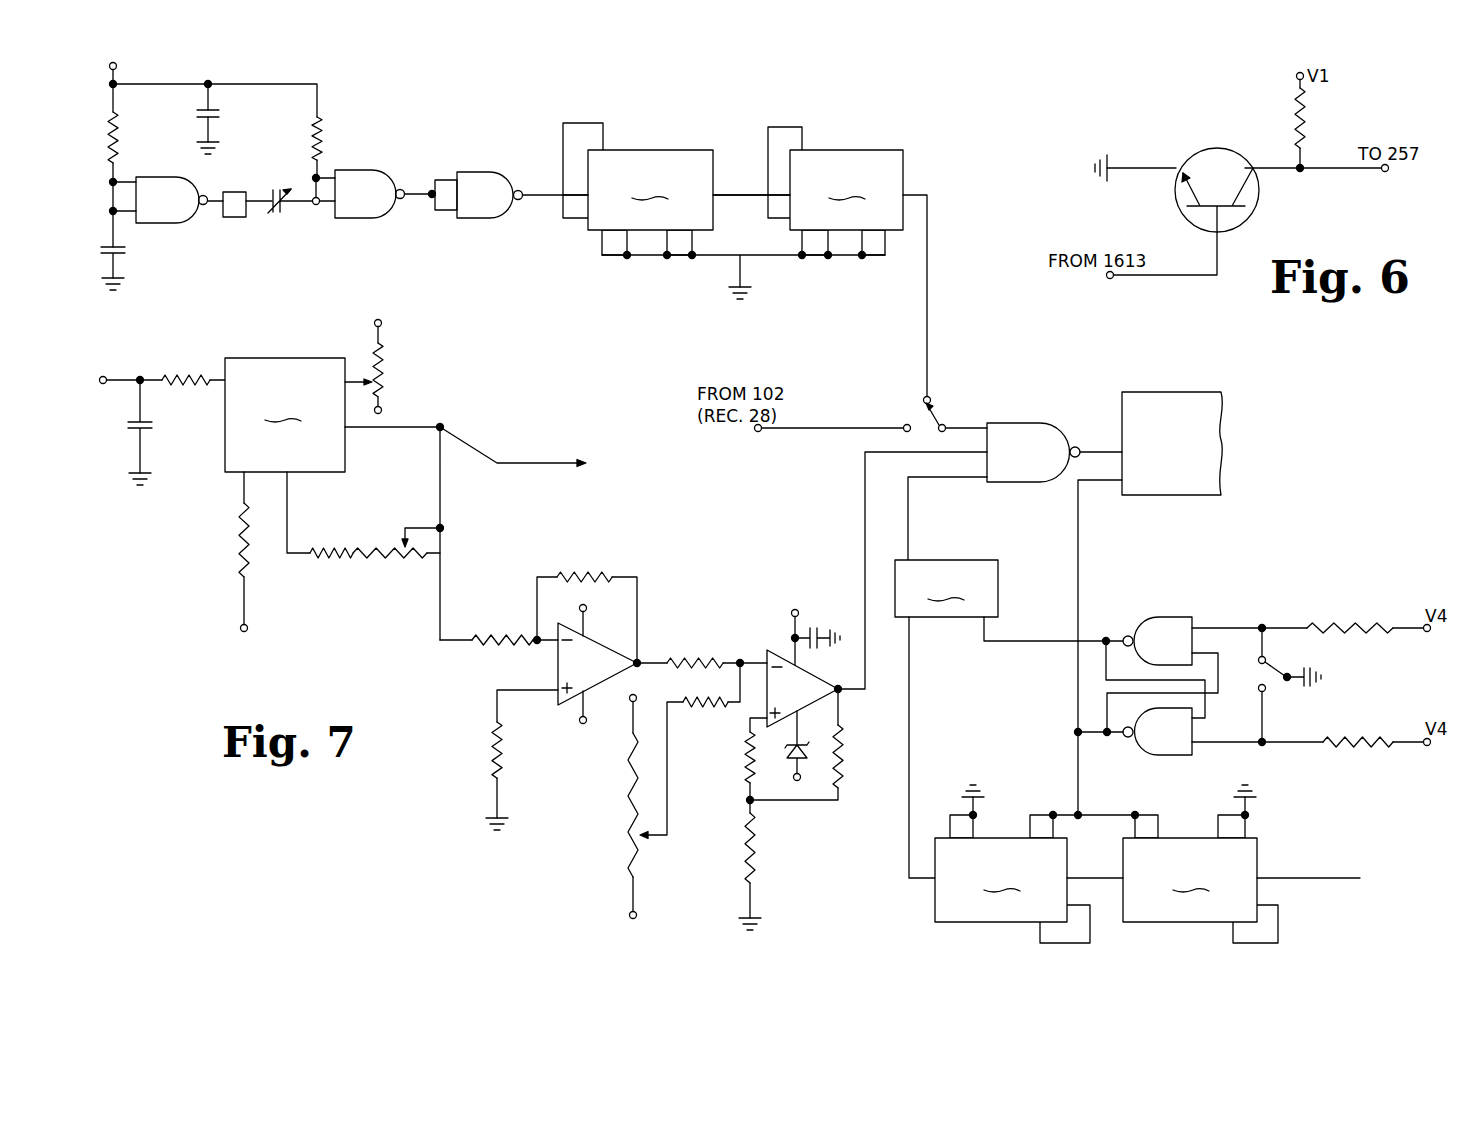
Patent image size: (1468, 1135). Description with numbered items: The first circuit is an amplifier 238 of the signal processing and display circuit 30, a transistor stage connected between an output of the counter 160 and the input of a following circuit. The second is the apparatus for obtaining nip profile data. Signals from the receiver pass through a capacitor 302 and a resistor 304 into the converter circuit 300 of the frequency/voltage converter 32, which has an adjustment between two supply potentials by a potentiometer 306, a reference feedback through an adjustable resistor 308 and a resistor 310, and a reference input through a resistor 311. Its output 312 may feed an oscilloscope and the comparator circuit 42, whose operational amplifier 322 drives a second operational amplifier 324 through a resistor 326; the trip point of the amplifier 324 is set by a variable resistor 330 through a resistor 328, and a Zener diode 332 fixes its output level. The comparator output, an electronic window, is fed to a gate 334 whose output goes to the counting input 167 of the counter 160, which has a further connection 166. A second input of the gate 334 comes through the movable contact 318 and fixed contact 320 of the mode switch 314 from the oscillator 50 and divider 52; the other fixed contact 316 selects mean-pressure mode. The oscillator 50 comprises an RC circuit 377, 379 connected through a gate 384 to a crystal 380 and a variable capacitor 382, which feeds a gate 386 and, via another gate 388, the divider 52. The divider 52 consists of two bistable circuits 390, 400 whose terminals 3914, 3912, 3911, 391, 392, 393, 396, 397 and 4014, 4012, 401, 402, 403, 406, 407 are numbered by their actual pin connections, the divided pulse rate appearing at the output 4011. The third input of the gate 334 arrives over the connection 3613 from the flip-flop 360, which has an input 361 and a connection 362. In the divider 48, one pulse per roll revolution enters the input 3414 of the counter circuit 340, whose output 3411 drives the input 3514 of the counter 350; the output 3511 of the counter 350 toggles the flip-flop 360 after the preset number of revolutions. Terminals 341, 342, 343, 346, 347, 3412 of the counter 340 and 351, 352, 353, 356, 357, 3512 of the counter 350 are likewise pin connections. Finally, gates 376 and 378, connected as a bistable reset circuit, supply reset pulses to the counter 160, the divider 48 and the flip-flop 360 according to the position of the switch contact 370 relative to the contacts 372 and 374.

In FIG. 6, the amplifier 238 is at (1290, 230).
In FIG. 7, the oscillator 50 is at (312, 169).
In FIG. 7, the RC circuit 377 is at (118, 136).
In FIG. 7, the RC circuit 379 is at (121, 252).
In FIG. 7, the gate 384 is at (160, 181).
In FIG. 7, the crystal 380 is at (236, 192).
In FIG. 7, the variable capacitor 382 is at (277, 188).
In FIG. 7, the gate 386 is at (365, 181).
In FIG. 7, the gate 388 is at (485, 180).
In FIG. 7, the divider 52 is at (728, 121).
In FIG. 7, the bistable circuit 390 is at (650, 190).
In FIG. 7, the bistable circuit 400 is at (846, 190).
In FIG. 7, the pin connection 3912 is at (630, 134).
In FIG. 7, the pin connection 3911 is at (713, 194).
In FIG. 7, the pin connection 3914 is at (572, 196).
In FIG. 7, the pin connection 391 is at (575, 220).
In FIG. 7, the pin connection 392 is at (602, 250).
In FIG. 7, the pin connection 393 is at (628, 258).
In FIG. 7, the pin connection 396 is at (672, 256).
In FIG. 7, the pin connection 397 is at (699, 243).
In FIG. 7, the pin connection 4014 is at (775, 190).
In FIG. 7, the pin connection 4012 is at (802, 138).
In FIG. 7, the output 4011 is at (910, 196).
In FIG. 7, the pin connection 401 is at (782, 218).
In FIG. 7, the pin connection 402 is at (802, 256).
In FIG. 7, the pin connection 403 is at (829, 258).
In FIG. 7, the pin connection 406 is at (864, 257).
In FIG. 7, the pin connection 407 is at (885, 243).
In FIG. 7, the digital/analog converter 32 is at (342, 314).
In FIG. 7, the converter circuit 300 is at (285, 415).
In FIG. 7, the capacitor 302 is at (152, 424).
In FIG. 7, the resistor 304 is at (187, 386).
In FIG. 7, the potentiometer 306 is at (388, 378).
In FIG. 7, the adjustable resistor 308 is at (408, 561).
In FIG. 7, the resistor 310 is at (338, 561).
In FIG. 7, the resistor 311 is at (236, 539).
In FIG. 7, the output 312 is at (386, 431).
In FIG. 7, the comparator circuit 42 is at (732, 562).
In FIG. 7, the operational amplifier 322 is at (597, 747).
In FIG. 7, the operational amplifier 324 is at (780, 647).
In FIG. 7, the resistor 326 is at (690, 666).
In FIG. 7, the resistor 328 is at (703, 705).
In FIG. 7, the variable resistor 330 is at (660, 848).
In FIG. 7, the Zener diode 332 is at (808, 757).
In FIG. 7, the mode switch 314 is at (905, 410).
In FIG. 7, the contact 316 is at (903, 425).
In FIG. 7, the movable contact 318 is at (941, 421).
In FIG. 7, the fixed contact 320 is at (932, 399).
In FIG. 7, the gate 334 is at (1018, 425).
In FIG. 7, the input connection 3613 is at (909, 539).
In FIG. 7, the counting input 167 is at (1109, 448).
In FIG. 7, the lead 166 is at (1108, 481).
In FIG. 7, the counter 160 is at (1184, 405).
In FIG. 7, the signal processing and display circuit 30 is at (1240, 460).
In FIG. 7, the flip-flop 360 is at (946, 588).
In FIG. 7, the input 361 is at (911, 627).
In FIG. 7, the lead 362 is at (989, 637).
In FIG. 7, the gate 376 is at (1160, 625).
In FIG. 7, the gate 378 is at (1172, 746).
In FIG. 7, the switch contact 372 is at (1270, 666).
In FIG. 7, the switch contact 374 is at (1258, 689).
In FIG. 7, the switch contact 370 is at (1272, 681).
In FIG. 7, the divider circuit 48 is at (1198, 935).
In FIG. 7, the counter 350 is at (1001, 880).
In FIG. 7, the counter circuit 340 is at (1190, 880).
In FIG. 7, the pin connection 351 is at (1093, 921).
In FIG. 7, the pin connection 352 is at (1029, 826).
In FIG. 7, the pin connection 353 is at (1053, 824).
In FIG. 7, the pin connection 356 is at (950, 826).
In FIG. 7, the pin connection 357 is at (974, 831).
In FIG. 7, the output 3511 is at (918, 880).
In FIG. 7, the pin connection 3512 is at (1040, 931).
In FIG. 7, the input 3514 is at (1085, 873).
In FIG. 7, the pin connection 341 is at (1278, 906).
In FIG. 7, the pin connection 342 is at (1135, 829).
In FIG. 7, the pin connection 343 is at (1158, 826).
In FIG. 7, the pin connection 346 is at (1218, 829).
In FIG. 7, the pin connection 347 is at (1248, 833).
In FIG. 7, the output 3411 is at (1113, 883).
In FIG. 7, the pin connection 3412 is at (1233, 937).
In FIG. 7, the input 3414 is at (1310, 881).